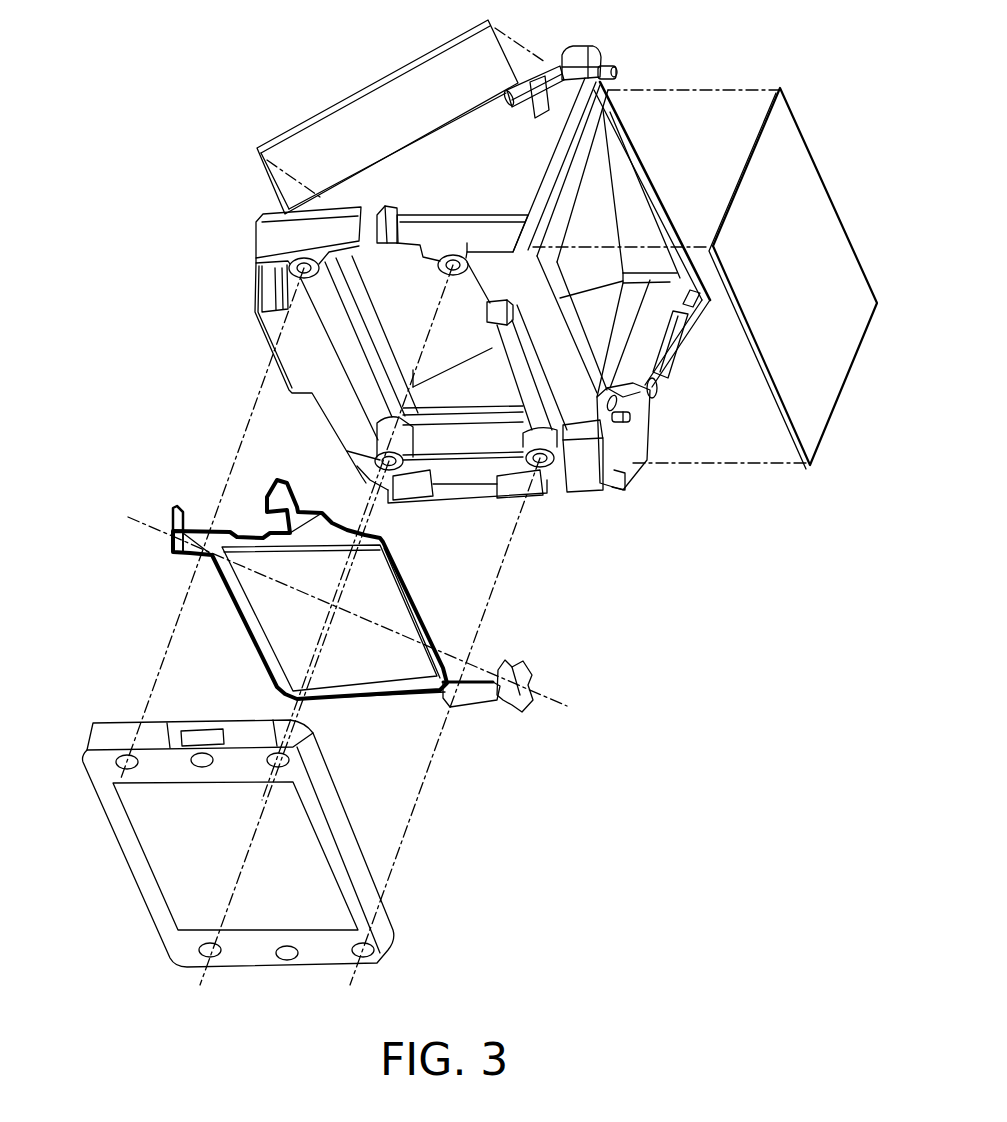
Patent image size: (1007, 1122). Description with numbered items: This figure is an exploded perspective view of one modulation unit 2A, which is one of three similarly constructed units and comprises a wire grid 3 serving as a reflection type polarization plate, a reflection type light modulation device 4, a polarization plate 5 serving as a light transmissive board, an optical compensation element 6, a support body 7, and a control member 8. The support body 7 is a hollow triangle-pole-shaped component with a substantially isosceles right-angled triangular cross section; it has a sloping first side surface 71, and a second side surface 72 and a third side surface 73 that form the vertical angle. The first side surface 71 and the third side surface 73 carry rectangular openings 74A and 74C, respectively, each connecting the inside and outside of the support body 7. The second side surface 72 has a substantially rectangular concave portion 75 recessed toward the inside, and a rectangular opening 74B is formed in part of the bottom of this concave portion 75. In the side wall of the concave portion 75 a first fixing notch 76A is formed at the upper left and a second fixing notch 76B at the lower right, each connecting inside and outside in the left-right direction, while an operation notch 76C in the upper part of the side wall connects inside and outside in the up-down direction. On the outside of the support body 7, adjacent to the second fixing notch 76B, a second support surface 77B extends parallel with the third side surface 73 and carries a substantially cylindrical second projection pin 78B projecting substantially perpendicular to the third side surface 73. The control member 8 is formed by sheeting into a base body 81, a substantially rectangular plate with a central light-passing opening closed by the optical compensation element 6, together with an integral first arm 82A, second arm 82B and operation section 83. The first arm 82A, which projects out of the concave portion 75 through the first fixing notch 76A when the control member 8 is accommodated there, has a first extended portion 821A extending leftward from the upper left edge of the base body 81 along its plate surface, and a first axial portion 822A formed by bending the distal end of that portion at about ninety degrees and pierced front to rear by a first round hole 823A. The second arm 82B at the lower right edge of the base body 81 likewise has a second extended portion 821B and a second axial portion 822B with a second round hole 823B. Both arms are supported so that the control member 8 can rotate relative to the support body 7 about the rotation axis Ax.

The modulation unit 2A is at (190, 132).
The wire grid 3 is at (338, 100).
The first side surface 71 is at (490, 105).
The support body 7 is at (537, 120).
The third side surface 73 is at (530, 233).
The opening 74C is at (632, 202).
The opening 74B is at (367, 307).
The opening 74A is at (453, 370).
The concave portion 75 is at (345, 333).
The second side surface 72 is at (255, 262).
The first fixing notch 76A is at (260, 284).
The second fixing notch 76B is at (630, 480).
The operation notch 76C is at (410, 194).
The second support surface 77B is at (643, 440).
The second projection pin 78B is at (633, 413).
The polarization plate 5 is at (812, 198).
The rotation axis Ax is at (572, 709).
The base body 81 is at (397, 573).
The operation section 83 is at (287, 490).
The first arm 82A is at (122, 550).
The first extended portion 821A is at (192, 556).
The first axial portion 822A is at (186, 537).
The first round hole 823A is at (180, 527).
The second arm 82B is at (593, 780).
The second extended portion 821B is at (473, 700).
The second axial portion 822B is at (530, 700).
The second round hole 823B is at (530, 675).
The optical compensation element 6 is at (393, 610).
The control member 8 is at (397, 702).
The reflection type light modulation device 4 is at (388, 917).